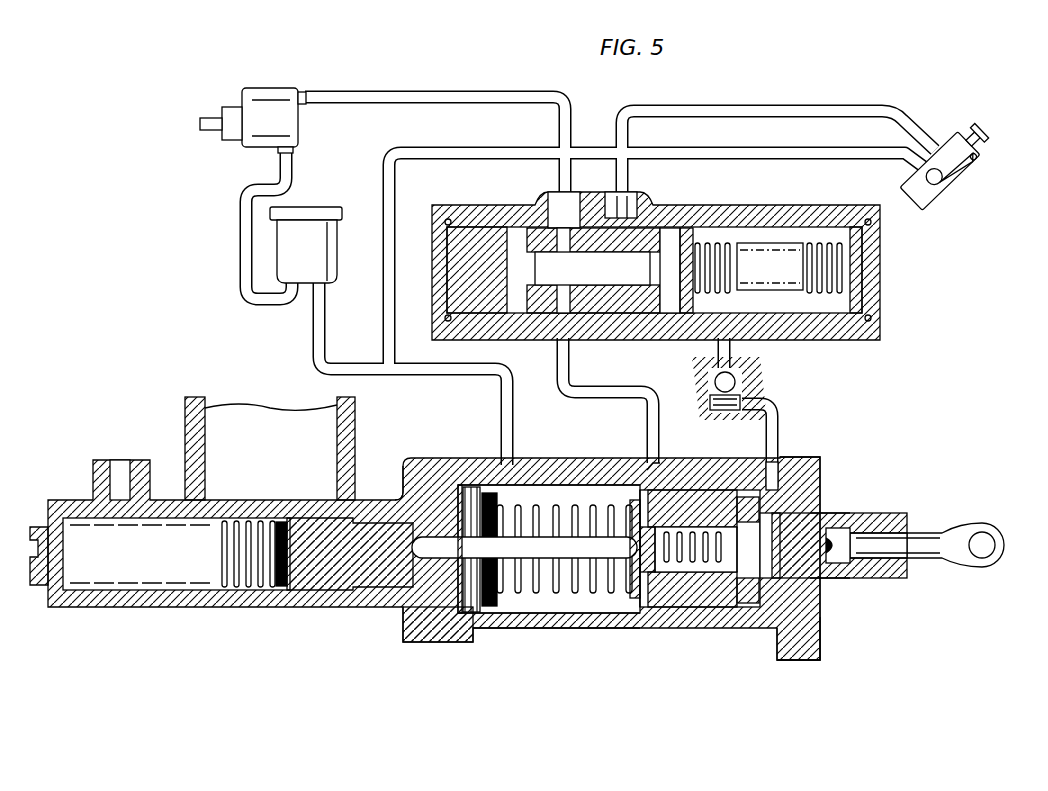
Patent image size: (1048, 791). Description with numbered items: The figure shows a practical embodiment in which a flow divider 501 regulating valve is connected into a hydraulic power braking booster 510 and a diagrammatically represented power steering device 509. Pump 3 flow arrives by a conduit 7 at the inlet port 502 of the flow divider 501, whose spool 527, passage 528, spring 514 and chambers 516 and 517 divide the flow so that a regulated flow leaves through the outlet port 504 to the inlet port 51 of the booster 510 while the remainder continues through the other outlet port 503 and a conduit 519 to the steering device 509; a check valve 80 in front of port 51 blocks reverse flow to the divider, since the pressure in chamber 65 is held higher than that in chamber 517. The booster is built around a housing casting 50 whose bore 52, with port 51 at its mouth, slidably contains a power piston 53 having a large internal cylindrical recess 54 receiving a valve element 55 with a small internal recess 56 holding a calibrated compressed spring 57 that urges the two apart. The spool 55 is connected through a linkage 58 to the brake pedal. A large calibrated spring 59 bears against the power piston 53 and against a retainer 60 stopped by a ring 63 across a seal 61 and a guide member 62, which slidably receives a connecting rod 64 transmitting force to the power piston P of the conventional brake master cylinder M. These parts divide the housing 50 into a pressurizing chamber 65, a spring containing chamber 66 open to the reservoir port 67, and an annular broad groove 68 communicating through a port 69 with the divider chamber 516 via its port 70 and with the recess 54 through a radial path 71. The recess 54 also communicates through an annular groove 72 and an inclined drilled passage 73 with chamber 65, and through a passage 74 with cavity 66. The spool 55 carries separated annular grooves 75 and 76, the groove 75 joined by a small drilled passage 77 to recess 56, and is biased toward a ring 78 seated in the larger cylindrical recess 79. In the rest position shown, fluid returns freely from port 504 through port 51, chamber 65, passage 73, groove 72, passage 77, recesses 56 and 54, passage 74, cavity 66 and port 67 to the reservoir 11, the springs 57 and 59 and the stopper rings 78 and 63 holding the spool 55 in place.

The pump 3 is at (281, 88).
The conduit 7 is at (384, 92).
The reservoir 11 is at (303, 245).
The flow divider 501 is at (714, 226).
The inlet port 502 is at (555, 200).
The outlet port 503 is at (630, 203).
The conduit 519 is at (616, 212).
The chamber 516 is at (527, 262).
The spool 527 is at (652, 268).
The passage 528 is at (680, 270).
The spring 514 is at (731, 243).
The chamber 517 is at (780, 243).
The power steering device 509 is at (965, 178).
The outlet port 504 is at (735, 345).
The port 70 is at (560, 352).
The check valve 80 is at (712, 376).
The brake master cylinder M is at (160, 608).
The power piston P is at (330, 562).
The ring 63 is at (400, 622).
The housing casting 50 is at (526, 552).
The seal 61 is at (472, 490).
The retainer 60 is at (498, 497).
The reservoir port 67 is at (495, 484).
The spring containing chamber 66 is at (555, 600).
The connecting rod 64 is at (555, 537).
The large compressed calibrated spring 59 is at (495, 613).
The guide member 62 is at (455, 625).
The bore 52 is at (525, 613).
The power piston 53 is at (610, 613).
The annular broad groove 68 is at (701, 576).
The annular groove 72 is at (700, 607).
The annular groove 76 is at (712, 607).
The annular groove 75 is at (690, 607).
The radial path 71 is at (710, 527).
The small drilled passage 77 is at (688, 527).
The ring 78 is at (748, 497).
The inclined drilled passage 73 is at (748, 603).
The small internal cylindrical recess 56 is at (742, 612).
The large internal cylindrical recess 54 is at (642, 607).
The port 69 is at (652, 462).
The inlet port 51 is at (778, 463).
The passage 74 is at (595, 560).
The power booster 510 is at (850, 470).
The calibrated compressed spring 57 is at (830, 510).
The valve element 55 is at (884, 513).
The pressurizing chamber 65 is at (825, 580).
The larger cylindrical recess 79 is at (815, 620).
The linkage 58 is at (928, 533).